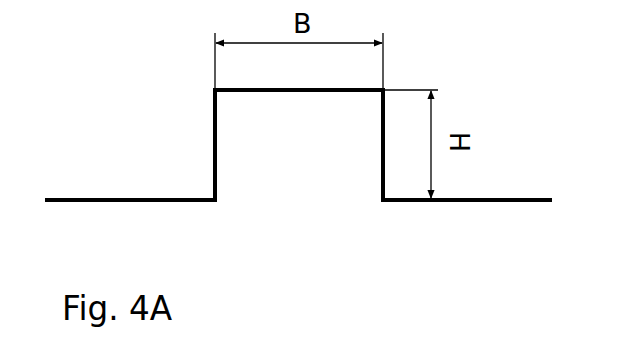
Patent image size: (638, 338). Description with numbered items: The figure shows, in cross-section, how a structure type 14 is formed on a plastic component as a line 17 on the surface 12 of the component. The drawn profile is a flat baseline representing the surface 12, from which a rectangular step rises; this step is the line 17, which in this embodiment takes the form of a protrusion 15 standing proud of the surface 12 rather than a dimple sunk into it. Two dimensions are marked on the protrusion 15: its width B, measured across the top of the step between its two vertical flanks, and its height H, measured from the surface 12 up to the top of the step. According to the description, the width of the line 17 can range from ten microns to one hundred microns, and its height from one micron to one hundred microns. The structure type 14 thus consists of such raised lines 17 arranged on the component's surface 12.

The surface 12 is at (505, 194).
The structure type 14 is at (186, 149).
The protrusion 15 is at (212, 107).
The line 17 is at (377, 146).